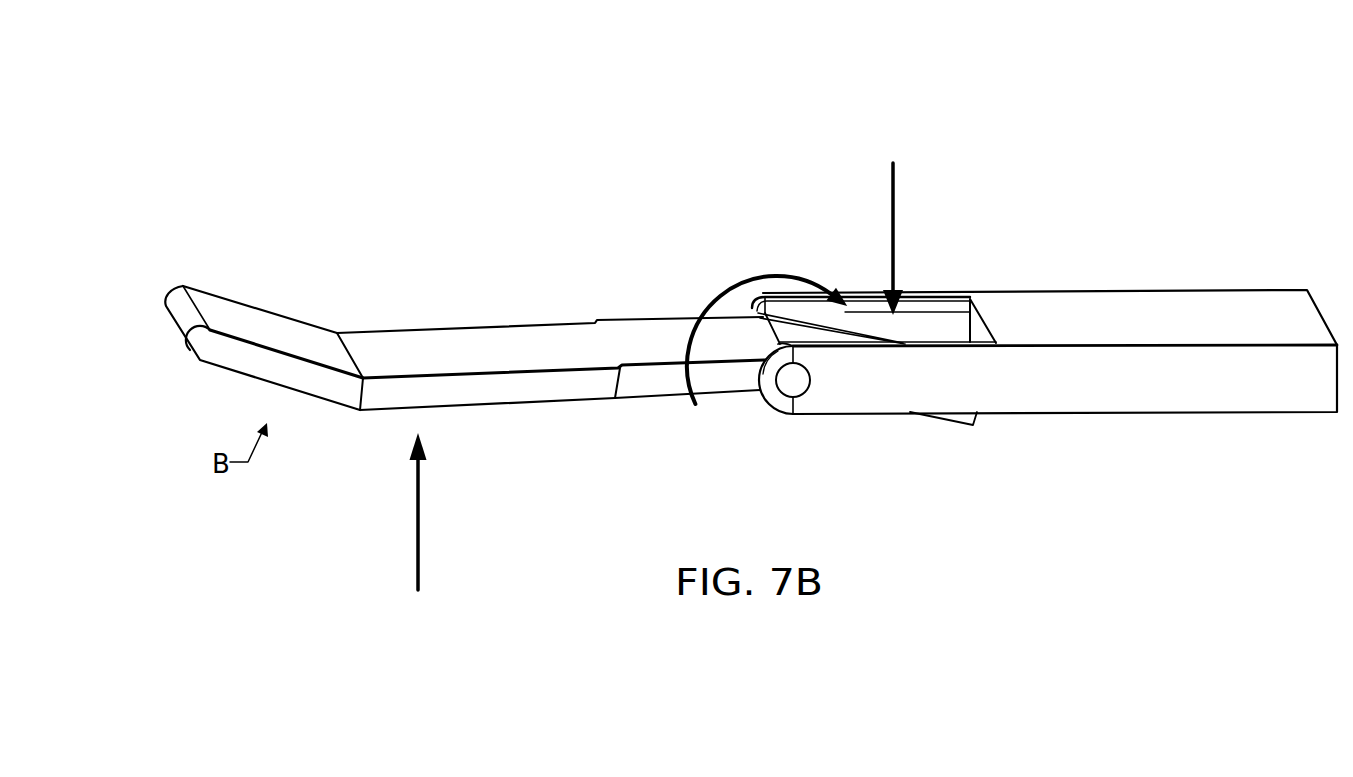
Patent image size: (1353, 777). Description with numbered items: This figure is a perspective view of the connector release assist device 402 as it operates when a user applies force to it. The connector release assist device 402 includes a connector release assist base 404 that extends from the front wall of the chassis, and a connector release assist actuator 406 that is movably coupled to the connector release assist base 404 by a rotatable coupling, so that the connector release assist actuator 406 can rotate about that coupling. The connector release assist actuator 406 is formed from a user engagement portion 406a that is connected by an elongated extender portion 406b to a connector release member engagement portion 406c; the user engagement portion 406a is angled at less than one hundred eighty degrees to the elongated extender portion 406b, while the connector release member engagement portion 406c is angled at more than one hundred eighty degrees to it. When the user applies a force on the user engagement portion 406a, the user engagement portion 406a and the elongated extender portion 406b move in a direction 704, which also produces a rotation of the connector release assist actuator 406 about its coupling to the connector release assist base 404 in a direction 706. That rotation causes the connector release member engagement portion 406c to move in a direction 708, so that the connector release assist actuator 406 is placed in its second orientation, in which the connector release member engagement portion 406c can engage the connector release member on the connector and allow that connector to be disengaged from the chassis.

The connector release assist device 402 is at (1278, 102).
The connector release assist base 404 is at (1170, 305).
The connector release assist actuator 406 is at (340, 335).
The user engagement portion 406a is at (230, 313).
The elongated extender portion 406b is at (532, 333).
The connector release member engagement portion 406c is at (970, 425).
The direction 704 is at (417, 542).
The direction 706 is at (758, 272).
The direction 708 is at (895, 208).